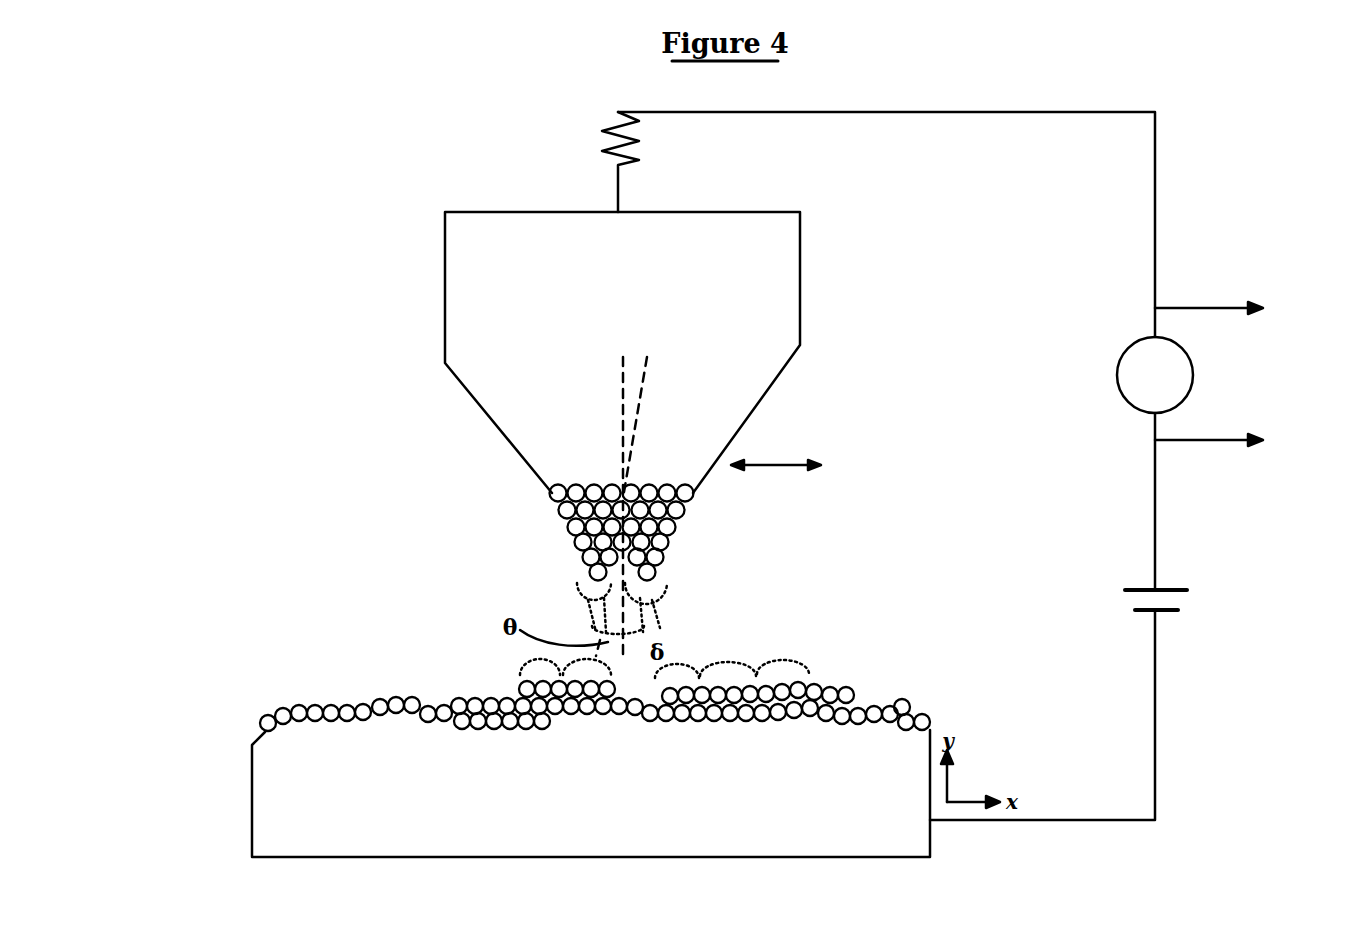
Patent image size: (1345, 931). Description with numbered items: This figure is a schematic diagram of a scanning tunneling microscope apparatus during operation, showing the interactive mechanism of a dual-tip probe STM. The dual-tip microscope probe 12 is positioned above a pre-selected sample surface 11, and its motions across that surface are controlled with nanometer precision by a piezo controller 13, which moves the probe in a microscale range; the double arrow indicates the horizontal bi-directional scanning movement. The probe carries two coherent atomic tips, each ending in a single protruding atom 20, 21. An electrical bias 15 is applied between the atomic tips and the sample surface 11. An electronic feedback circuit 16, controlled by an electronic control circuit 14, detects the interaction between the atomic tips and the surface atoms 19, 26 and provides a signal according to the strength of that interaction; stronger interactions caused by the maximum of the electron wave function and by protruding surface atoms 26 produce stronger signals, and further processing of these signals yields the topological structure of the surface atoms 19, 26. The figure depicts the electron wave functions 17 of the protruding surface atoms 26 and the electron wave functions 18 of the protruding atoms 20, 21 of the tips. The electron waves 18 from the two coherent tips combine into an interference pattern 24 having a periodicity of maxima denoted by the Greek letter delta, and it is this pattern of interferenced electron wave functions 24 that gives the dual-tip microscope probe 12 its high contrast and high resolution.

The sample surface 11 is at (275, 782).
The dual-tip microscope probe 12 is at (488, 390).
The piezo controller 13 is at (612, 130).
The electronic control circuit 14 is at (1155, 718).
The electrical bias 15 is at (1160, 590).
The electronic feedback circuit 16 is at (1198, 370).
The electron wave functions of the protruding surface atoms 17 is at (813, 673).
The electron wave functions of the protruding atoms 18 is at (668, 585).
The surface atoms 19 is at (277, 717).
The protruding atom 20 is at (595, 573).
The protruding atom 21 is at (663, 572).
The interference pattern 24 is at (657, 613).
The protruding surface atoms 26 is at (525, 690).